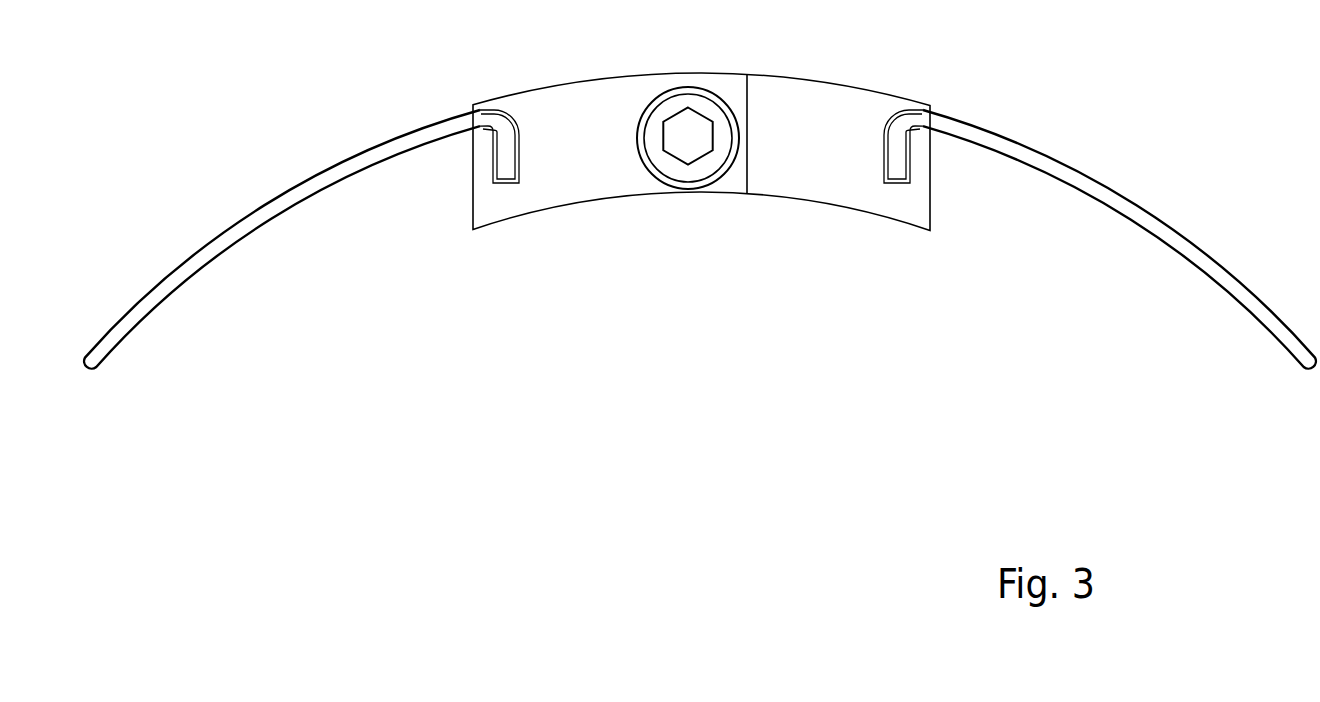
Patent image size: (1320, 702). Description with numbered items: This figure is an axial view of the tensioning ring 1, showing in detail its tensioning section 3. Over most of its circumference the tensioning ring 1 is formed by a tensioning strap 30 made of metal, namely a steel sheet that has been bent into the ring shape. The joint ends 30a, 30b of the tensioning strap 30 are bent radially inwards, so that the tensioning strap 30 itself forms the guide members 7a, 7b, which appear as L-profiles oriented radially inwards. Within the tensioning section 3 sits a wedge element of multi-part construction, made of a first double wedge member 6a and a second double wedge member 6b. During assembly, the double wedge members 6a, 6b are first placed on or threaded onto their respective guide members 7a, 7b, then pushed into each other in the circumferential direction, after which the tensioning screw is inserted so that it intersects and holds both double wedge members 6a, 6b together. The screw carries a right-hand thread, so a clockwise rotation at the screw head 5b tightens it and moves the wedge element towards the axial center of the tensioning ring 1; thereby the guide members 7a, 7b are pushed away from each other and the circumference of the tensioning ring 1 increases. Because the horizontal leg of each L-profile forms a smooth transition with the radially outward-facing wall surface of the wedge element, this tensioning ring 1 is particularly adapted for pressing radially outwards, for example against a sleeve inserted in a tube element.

The tensioning ring 1 is at (1076, 90).
The tensioning section 3 is at (473, 66).
The screw head 5b is at (673, 160).
The first double wedge member 6a is at (580, 165).
The second double wedge member 6b is at (794, 155).
The guide member 7a is at (508, 160).
The guide member 7b is at (898, 162).
The tensioning strap 30 is at (302, 197).
The joint end of the tensioning strap 30a is at (512, 194).
The joint end of the tensioning strap 30b is at (914, 197).